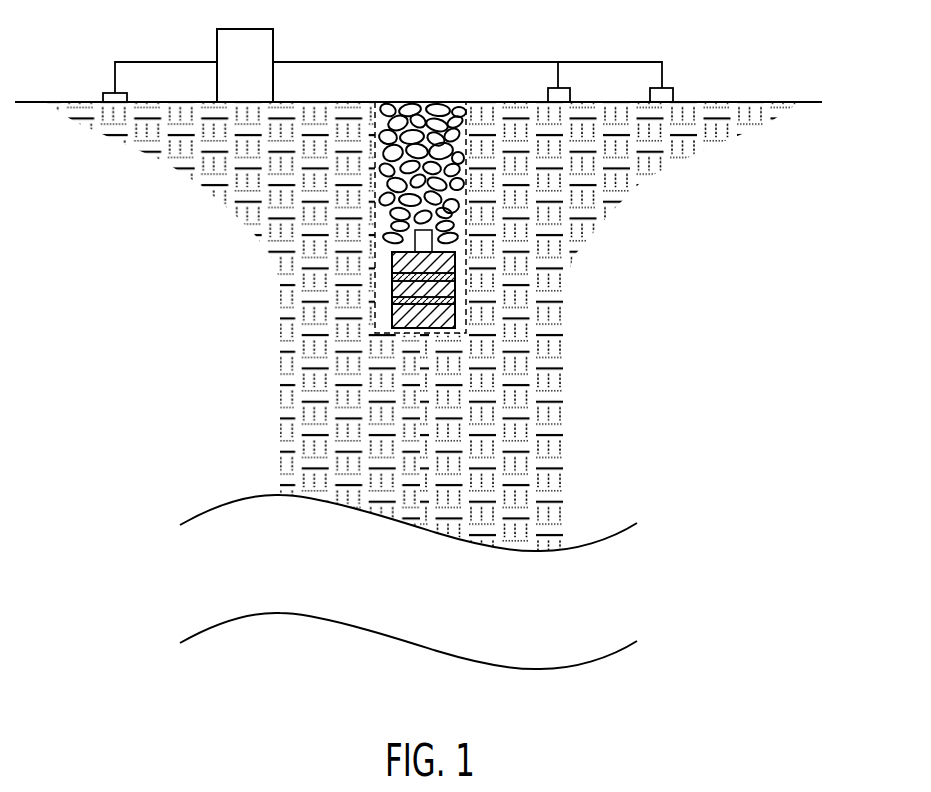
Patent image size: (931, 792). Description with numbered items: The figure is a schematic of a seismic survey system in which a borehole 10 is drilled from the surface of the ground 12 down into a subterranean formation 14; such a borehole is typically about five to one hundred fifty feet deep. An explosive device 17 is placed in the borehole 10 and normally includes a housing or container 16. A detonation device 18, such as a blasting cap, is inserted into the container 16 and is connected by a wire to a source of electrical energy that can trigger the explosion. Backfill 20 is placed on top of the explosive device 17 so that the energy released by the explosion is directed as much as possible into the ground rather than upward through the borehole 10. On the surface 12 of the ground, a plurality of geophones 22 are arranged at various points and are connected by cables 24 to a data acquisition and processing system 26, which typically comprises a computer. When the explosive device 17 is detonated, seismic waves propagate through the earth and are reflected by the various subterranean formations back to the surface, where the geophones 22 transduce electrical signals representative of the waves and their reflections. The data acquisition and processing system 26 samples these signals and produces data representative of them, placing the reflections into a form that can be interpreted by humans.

The borehole 10 is at (477, 178).
The surface of the ground 12 is at (727, 101).
The subterranean formation 14 is at (558, 368).
The housing or container 16 is at (458, 292).
The explosive device 17 is at (389, 294).
The detonation device 18 is at (411, 239).
The backfill 20 is at (387, 183).
The geophones 22 is at (108, 93).
The cables 24 is at (172, 62).
The data acquisition and processing system 26 is at (259, 79).